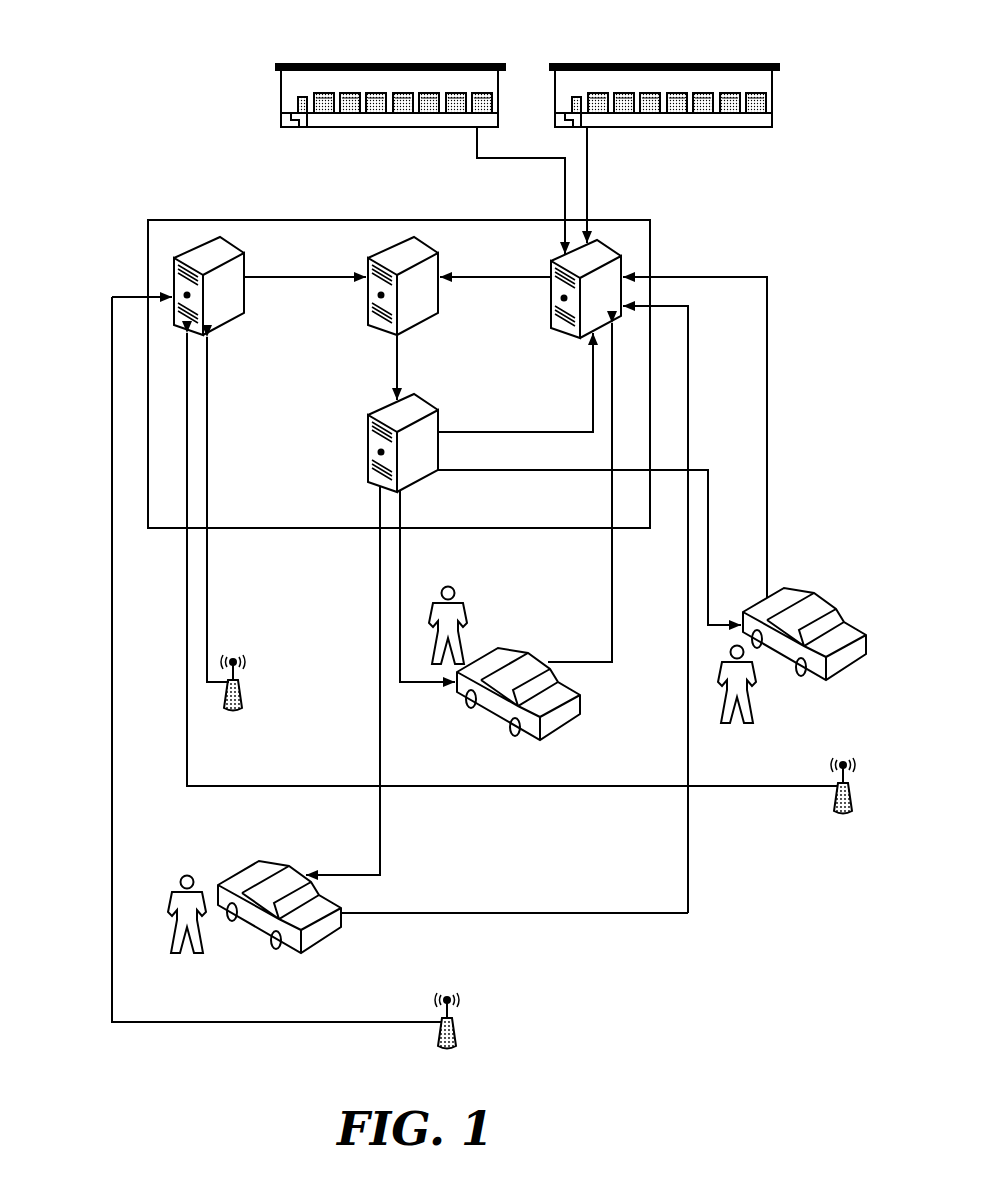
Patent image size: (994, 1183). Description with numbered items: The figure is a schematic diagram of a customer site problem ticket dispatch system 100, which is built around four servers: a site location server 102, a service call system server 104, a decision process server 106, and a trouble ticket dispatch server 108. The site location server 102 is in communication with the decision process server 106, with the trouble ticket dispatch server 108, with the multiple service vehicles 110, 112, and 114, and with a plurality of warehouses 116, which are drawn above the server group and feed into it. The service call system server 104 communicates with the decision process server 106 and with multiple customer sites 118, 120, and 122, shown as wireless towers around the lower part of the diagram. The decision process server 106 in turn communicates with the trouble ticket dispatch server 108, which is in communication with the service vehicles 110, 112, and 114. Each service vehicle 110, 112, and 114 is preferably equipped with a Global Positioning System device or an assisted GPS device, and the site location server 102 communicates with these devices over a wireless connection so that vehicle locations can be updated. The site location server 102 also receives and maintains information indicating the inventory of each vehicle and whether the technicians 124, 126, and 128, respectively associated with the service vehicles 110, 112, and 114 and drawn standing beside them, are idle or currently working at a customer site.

The customer site problem ticket dispatch system 100 is at (146, 253).
The site location server 102 is at (597, 238).
The service call system server 104 is at (221, 236).
The decision process server 106 is at (414, 237).
The trouble ticket dispatch server 108 is at (420, 478).
The service vehicle 110 is at (257, 862).
The service vehicle 112 is at (790, 586).
The service vehicle 114 is at (553, 732).
The warehouse 116 is at (341, 66).
The customer site 118 is at (239, 676).
The customer site 120 is at (838, 783).
The customer site 122 is at (453, 1021).
The technician 124 is at (196, 950).
The technician 126 is at (753, 720).
The technician 128 is at (467, 622).